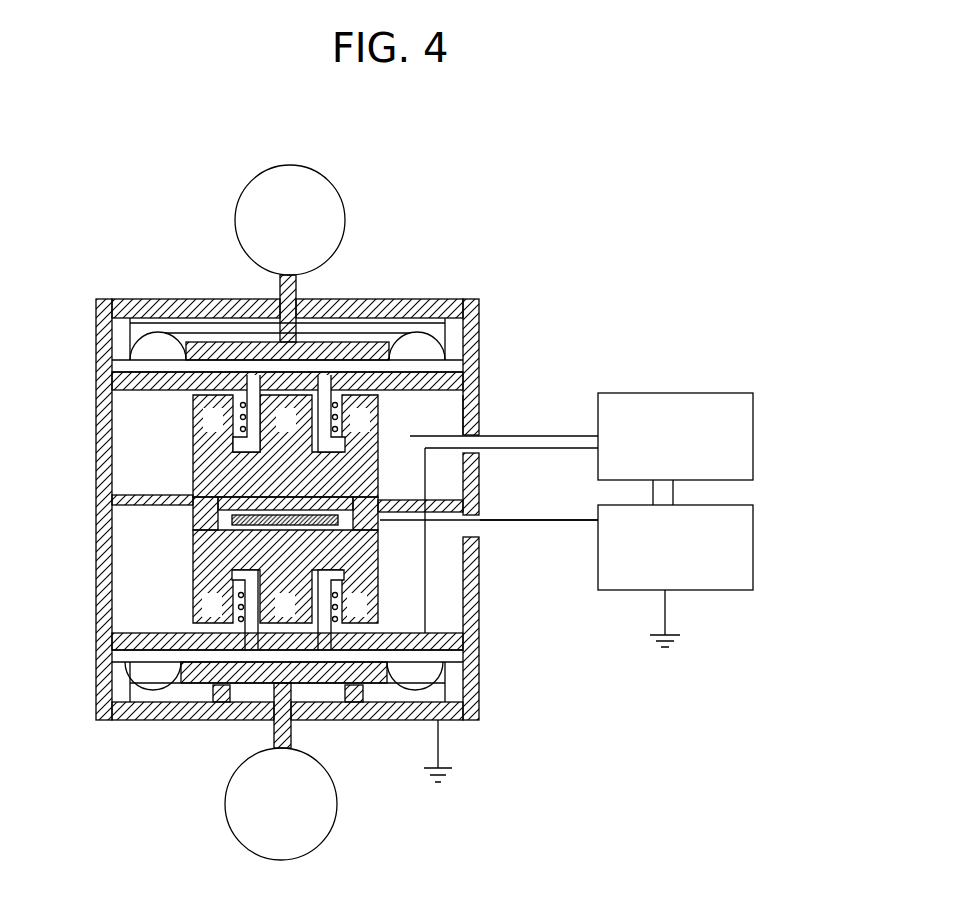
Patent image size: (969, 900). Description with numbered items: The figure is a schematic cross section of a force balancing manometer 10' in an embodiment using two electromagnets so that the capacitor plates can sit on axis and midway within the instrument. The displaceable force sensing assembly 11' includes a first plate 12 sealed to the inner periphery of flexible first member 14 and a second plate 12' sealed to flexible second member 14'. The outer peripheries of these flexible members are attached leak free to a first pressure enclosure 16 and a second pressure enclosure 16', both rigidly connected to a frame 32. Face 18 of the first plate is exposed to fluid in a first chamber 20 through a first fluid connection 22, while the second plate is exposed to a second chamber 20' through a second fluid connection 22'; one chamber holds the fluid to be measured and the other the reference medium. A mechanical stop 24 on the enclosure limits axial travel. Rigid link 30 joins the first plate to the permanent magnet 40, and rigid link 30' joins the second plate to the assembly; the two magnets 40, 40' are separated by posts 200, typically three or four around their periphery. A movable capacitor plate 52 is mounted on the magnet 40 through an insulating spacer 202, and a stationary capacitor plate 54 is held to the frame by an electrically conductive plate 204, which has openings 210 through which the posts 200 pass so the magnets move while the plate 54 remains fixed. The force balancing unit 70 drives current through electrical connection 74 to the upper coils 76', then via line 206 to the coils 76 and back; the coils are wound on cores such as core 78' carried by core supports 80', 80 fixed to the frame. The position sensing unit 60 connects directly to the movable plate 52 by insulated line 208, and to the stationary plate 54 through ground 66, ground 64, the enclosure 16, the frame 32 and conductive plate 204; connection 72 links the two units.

The force balancing manometer 10' is at (465, 236).
The displaceable force sensing assembly 11' is at (103, 607).
The second plate 12' is at (287, 303).
The first plate 12 is at (287, 729).
The flexible second member 14' is at (259, 306).
The flexible first member 14 is at (266, 715).
The second pressure enclosure 16' is at (305, 392).
The first pressure enclosure 16 is at (312, 729).
The face of first plate 18 is at (470, 612).
The second chamber 20' is at (320, 216).
The first chamber 20 is at (298, 811).
The second fluid connection 22' is at (324, 306).
The first fluid connection 22 is at (244, 723).
The mechanical stop 24 is at (352, 702).
The rigid link 30 is at (250, 372).
The rigid link 30' is at (248, 655).
The frame 32 is at (96, 340).
The electromagnet 40' is at (208, 446).
The permanent magnet 40 is at (207, 576).
The movable capacitor plate 52 is at (215, 517).
The stationary capacitor plate 54 is at (410, 470).
The position sensing unit 60 is at (753, 560).
The ground 64 is at (440, 757).
The ground 66 is at (665, 622).
The force balancing unit 70 is at (753, 425).
The control signal connection 72 is at (714, 497).
The electrical connection 74 is at (541, 424).
The upper coil 76' is at (194, 413).
The coil 76 is at (190, 610).
The core 78' is at (500, 410).
The core support 80' is at (325, 361).
The core support 80 is at (317, 651).
The posts 200 is at (150, 500).
The insulating spacer 202 is at (385, 545).
The electrically conductive plate 204 is at (395, 505).
The line 206 is at (440, 585).
The insulated line 208 is at (578, 522).
The openings 210 is at (400, 528).